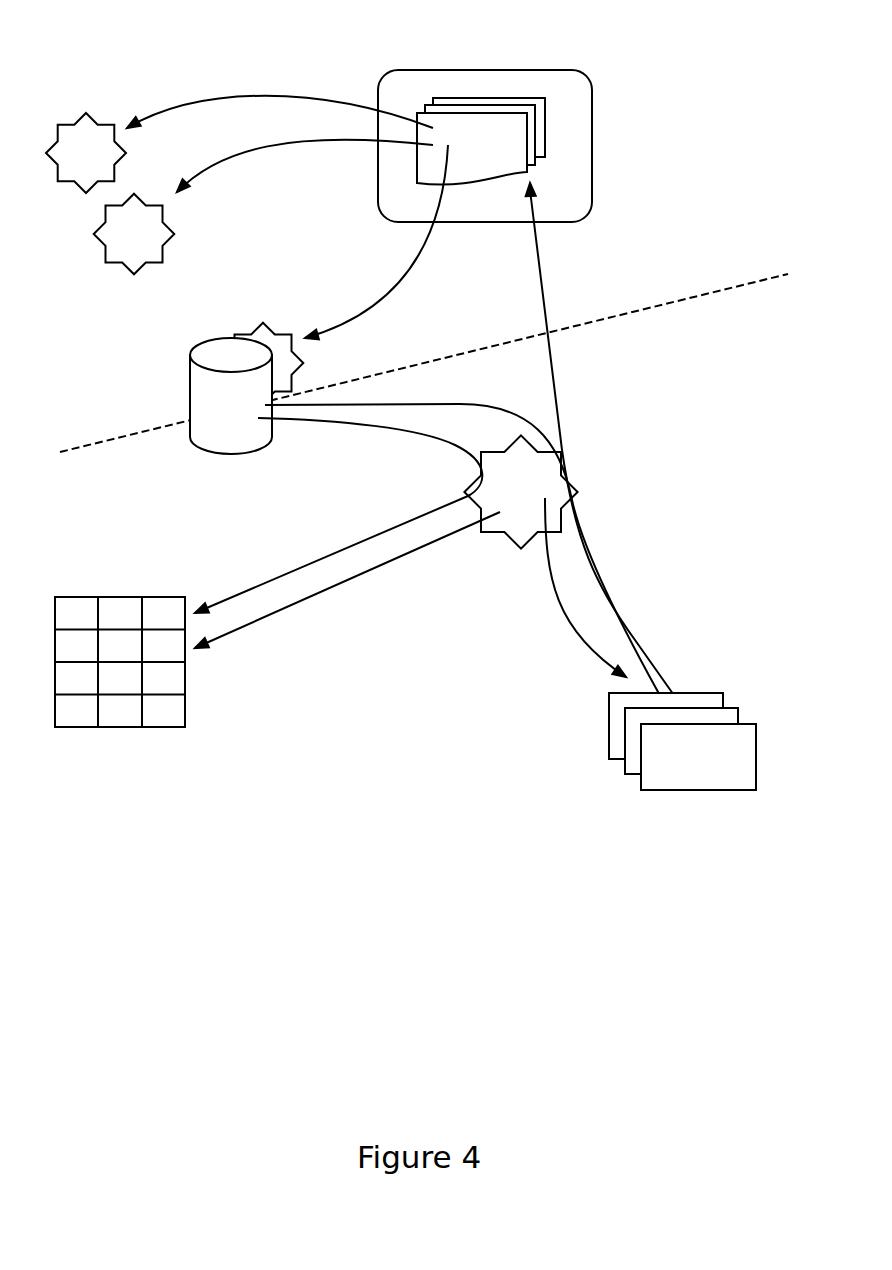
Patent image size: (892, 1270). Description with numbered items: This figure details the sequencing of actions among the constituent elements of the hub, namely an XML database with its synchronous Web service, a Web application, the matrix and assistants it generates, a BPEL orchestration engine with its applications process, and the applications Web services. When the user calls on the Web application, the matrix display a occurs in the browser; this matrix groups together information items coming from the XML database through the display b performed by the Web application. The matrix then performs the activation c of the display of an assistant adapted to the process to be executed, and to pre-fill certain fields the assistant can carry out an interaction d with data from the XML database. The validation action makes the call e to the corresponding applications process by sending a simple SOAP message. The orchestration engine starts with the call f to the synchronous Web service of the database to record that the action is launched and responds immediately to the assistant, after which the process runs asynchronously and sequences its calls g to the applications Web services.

The calls to the Web services g is at (217, 170).
The call to the synchronous Web service f is at (380, 297).
The call of the applications process e is at (543, 310).
The interaction with data from the XML database d is at (430, 404).
The display by the Web application b is at (380, 428).
The display of the matrix a is at (355, 583).
The activation of the assistant display c is at (570, 613).